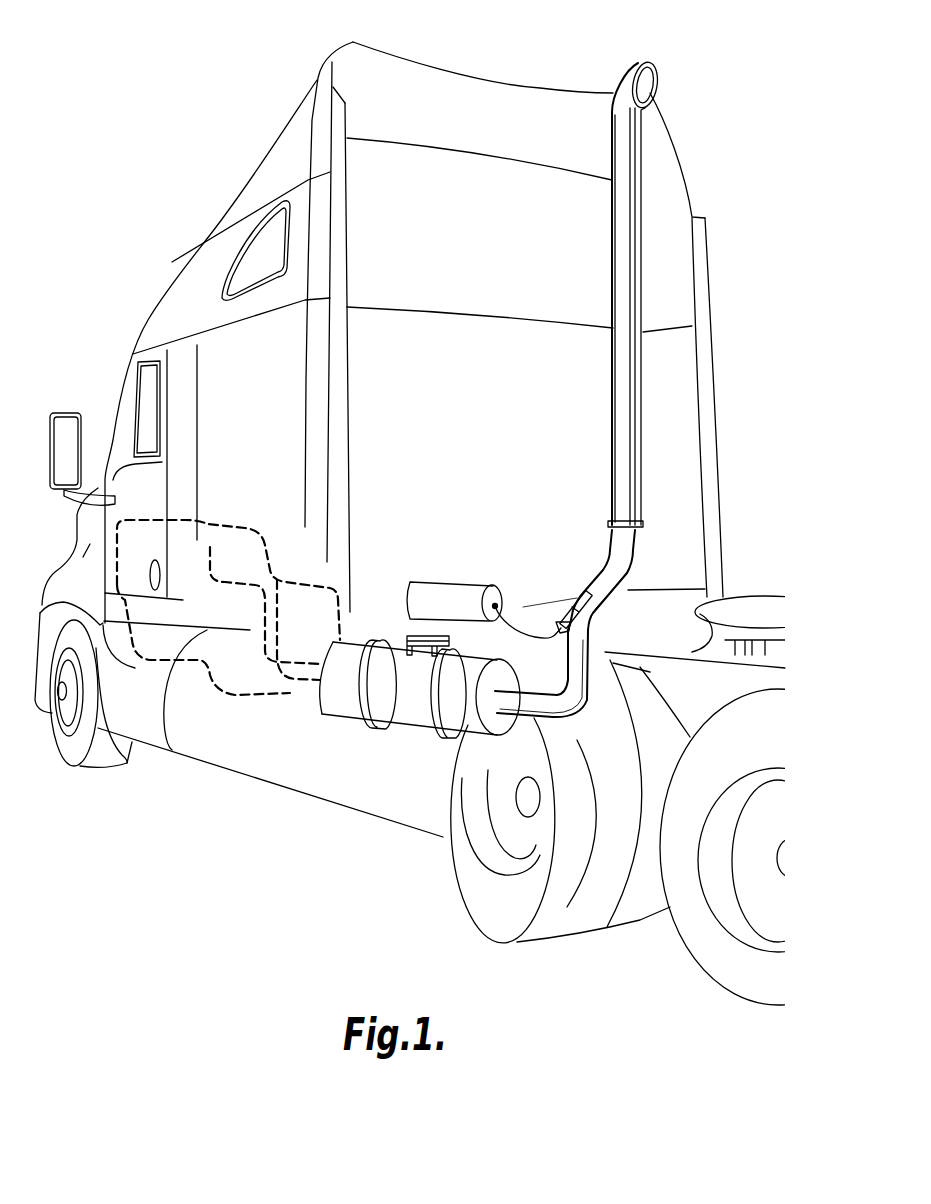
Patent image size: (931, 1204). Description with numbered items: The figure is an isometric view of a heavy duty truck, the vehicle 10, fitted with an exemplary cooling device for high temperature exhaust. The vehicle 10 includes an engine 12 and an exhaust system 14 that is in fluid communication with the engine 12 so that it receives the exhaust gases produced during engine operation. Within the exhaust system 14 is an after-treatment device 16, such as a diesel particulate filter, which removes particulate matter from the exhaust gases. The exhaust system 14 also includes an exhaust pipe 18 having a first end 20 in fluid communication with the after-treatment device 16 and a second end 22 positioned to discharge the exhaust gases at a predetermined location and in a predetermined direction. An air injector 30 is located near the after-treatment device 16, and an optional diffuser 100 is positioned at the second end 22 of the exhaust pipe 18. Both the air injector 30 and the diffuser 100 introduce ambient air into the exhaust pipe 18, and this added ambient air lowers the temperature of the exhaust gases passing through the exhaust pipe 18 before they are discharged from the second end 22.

The vehicle 10 is at (132, 153).
The engine 12 is at (211, 678).
The exhaust system 14 is at (507, 521).
The after-treatment device 16 is at (343, 694).
The exhaust pipe 18 is at (538, 912).
The first end 20 is at (432, 787).
The second end 22 is at (634, 545).
The air injector 30 is at (562, 611).
The diffuser 100 is at (643, 278).